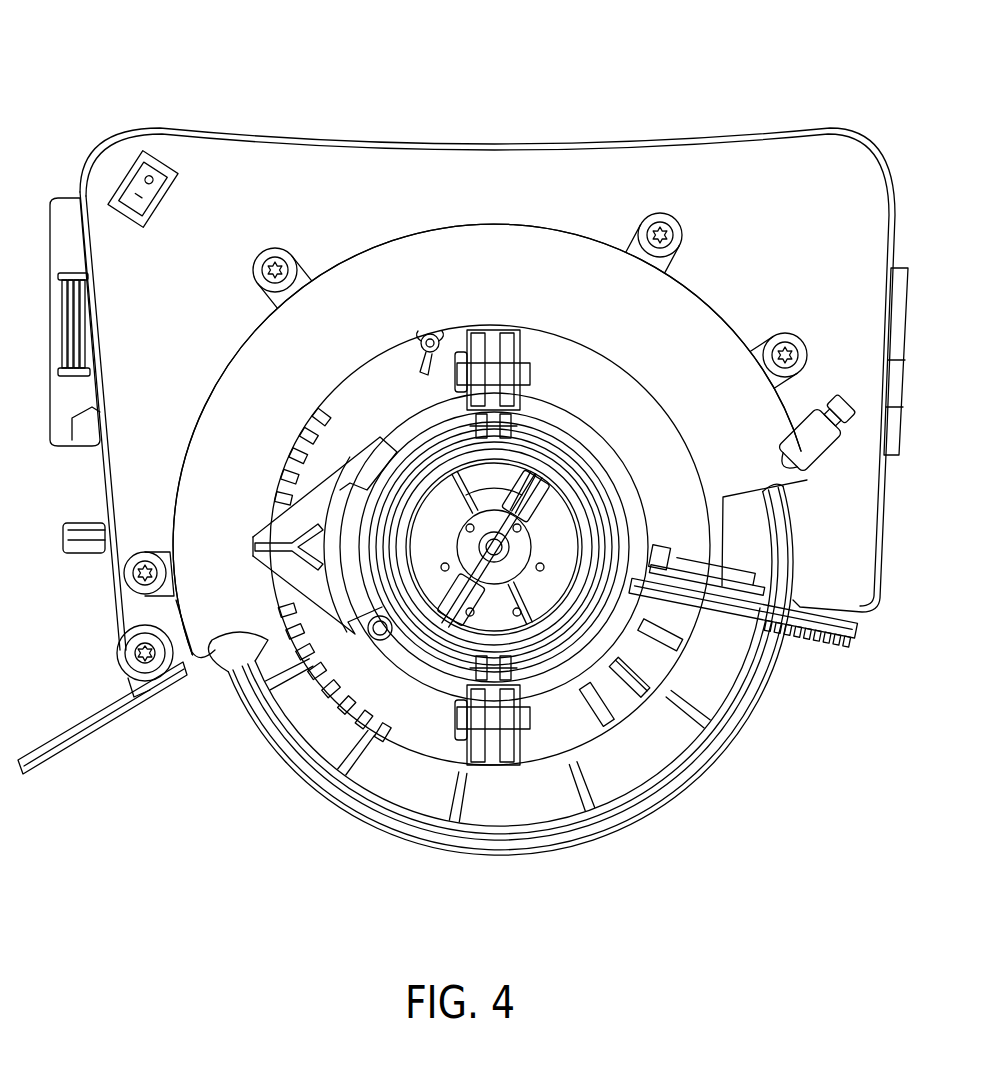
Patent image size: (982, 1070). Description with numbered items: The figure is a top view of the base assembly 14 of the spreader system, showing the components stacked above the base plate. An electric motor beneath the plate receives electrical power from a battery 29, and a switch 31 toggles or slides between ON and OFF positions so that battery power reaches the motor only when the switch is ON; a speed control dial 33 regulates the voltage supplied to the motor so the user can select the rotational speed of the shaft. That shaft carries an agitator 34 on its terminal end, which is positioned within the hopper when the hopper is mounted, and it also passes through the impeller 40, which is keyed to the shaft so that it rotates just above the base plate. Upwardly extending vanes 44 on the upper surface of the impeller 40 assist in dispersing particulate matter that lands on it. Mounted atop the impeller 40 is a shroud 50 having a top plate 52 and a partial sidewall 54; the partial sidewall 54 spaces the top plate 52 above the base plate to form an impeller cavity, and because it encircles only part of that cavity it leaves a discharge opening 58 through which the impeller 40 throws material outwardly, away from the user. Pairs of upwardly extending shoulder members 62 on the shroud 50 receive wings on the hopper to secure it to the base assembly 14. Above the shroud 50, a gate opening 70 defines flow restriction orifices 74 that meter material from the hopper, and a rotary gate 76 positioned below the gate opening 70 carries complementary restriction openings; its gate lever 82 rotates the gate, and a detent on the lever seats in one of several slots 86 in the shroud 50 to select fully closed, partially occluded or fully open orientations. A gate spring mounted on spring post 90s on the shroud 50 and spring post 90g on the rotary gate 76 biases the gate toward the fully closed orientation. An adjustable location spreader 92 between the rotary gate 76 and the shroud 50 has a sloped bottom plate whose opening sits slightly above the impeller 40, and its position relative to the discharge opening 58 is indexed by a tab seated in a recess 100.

The base assembly 14 is at (158, 97).
The battery 29 is at (72, 448).
The switch 31 is at (150, 200).
The speed control dial 33 is at (86, 556).
The agitator 34 is at (558, 492).
The impeller 40 is at (668, 750).
The vanes 44 is at (594, 792).
The shroud 50 is at (196, 376).
The top plate 52 is at (600, 375).
The partial sidewall 54 is at (372, 268).
The discharge opening 58 is at (422, 806).
The shoulder members 62 is at (483, 335).
The gate opening 70 is at (606, 528).
The flow restriction orifices 74 is at (578, 418).
The rotary gate 76 is at (430, 680).
The gate lever 82 is at (826, 650).
The slots 86 is at (672, 641).
The spring post 90g is at (374, 640).
The spring post 90s is at (428, 334).
The adjustable location spreader 92 is at (375, 446).
The recess 100 is at (322, 412).